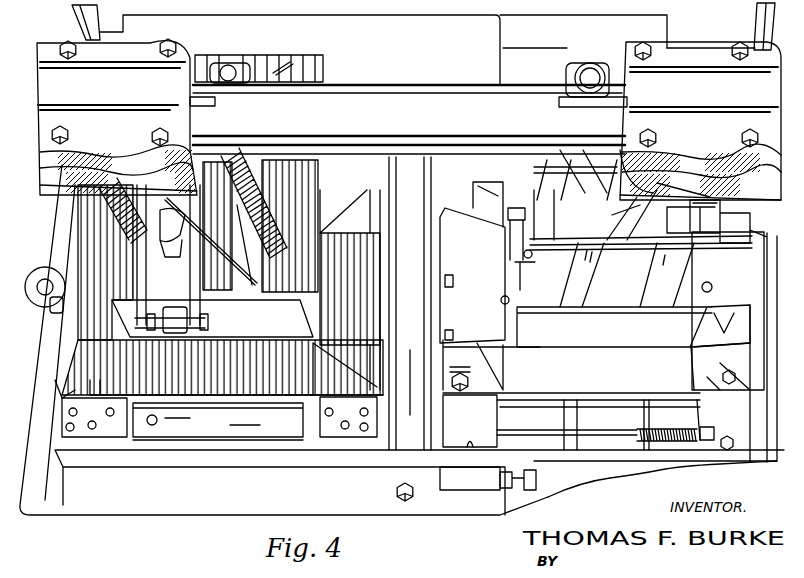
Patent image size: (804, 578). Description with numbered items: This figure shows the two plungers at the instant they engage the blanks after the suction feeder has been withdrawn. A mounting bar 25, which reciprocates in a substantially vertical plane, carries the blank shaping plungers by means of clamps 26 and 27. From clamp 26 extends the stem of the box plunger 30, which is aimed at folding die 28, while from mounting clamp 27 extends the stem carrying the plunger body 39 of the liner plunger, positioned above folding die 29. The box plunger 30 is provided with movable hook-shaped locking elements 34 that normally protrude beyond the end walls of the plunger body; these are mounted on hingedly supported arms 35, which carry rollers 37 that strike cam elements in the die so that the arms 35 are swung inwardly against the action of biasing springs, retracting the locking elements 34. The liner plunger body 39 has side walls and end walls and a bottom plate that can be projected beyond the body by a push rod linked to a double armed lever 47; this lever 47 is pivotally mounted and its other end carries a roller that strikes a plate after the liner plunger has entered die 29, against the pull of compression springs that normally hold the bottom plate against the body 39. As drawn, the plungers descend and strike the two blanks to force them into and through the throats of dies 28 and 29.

The mounting bar 25 is at (410, 129).
The clamp 26 is at (711, 96).
The clamp 27 is at (117, 96).
The folding die 28 is at (482, 422).
The folding die 29 is at (229, 431).
The box plunger 30 is at (620, 338).
The hook-shaped locking element 34 is at (501, 300).
The arm 35 is at (548, 276).
The roller 37 is at (503, 242).
The plunger body 39 is at (258, 330).
The double armed lever 47 is at (150, 335).